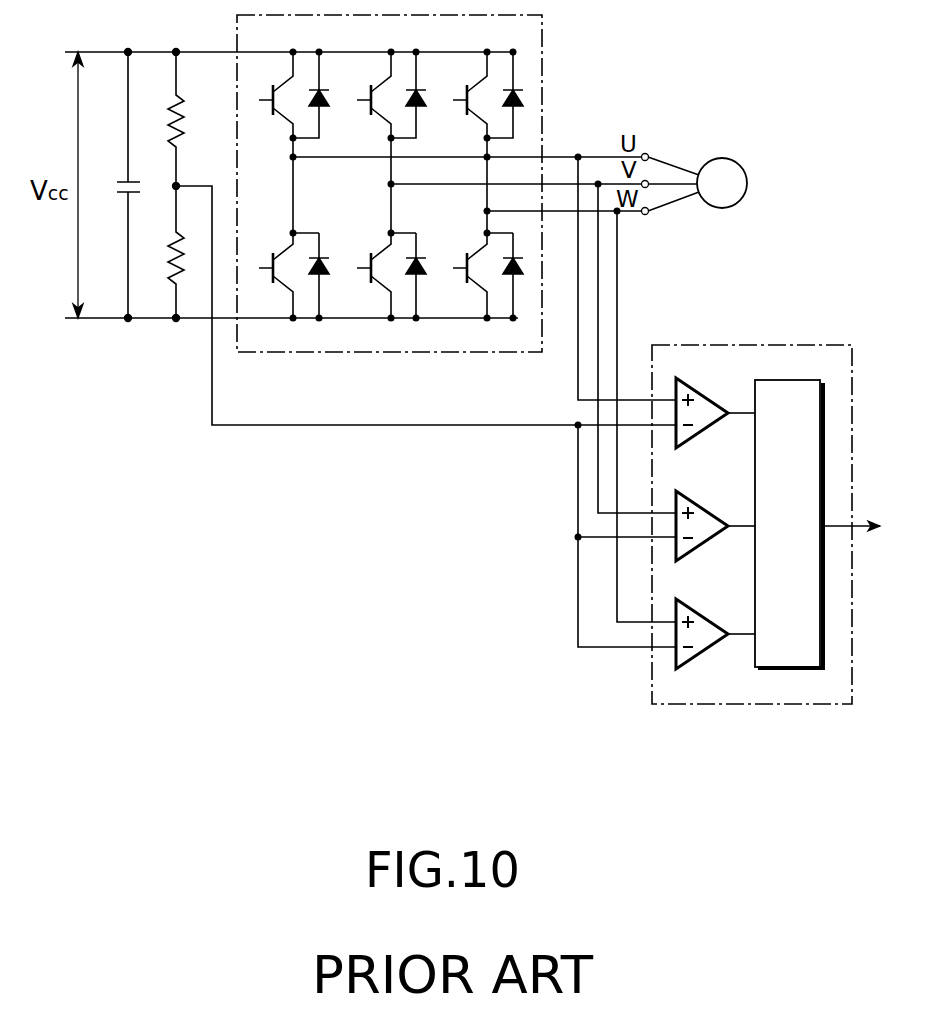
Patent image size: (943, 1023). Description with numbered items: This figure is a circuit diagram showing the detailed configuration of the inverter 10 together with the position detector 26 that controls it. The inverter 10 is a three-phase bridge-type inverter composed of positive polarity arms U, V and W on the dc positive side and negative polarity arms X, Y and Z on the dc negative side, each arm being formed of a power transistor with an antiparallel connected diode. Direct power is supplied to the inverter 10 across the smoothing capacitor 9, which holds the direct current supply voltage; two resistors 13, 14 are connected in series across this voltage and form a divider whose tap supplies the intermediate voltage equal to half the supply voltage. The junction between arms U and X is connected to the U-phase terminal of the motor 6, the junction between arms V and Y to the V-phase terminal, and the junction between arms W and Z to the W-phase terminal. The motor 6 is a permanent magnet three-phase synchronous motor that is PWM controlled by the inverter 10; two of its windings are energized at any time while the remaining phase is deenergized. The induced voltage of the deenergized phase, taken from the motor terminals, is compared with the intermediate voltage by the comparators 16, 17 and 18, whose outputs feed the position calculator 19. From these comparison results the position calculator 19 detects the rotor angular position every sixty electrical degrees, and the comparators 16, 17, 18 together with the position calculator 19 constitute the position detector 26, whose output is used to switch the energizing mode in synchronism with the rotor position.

The motor 6 is at (722, 158).
The smoothing capacitor 9 is at (133, 177).
The inverter 10 is at (542, 46).
The resistor 13 is at (184, 123).
The resistor 14 is at (167, 262).
The comparator 16 is at (698, 390).
The comparator 17 is at (696, 503).
The comparator 18 is at (696, 606).
The position calculator 19 is at (782, 380).
The position detector 26 is at (676, 705).